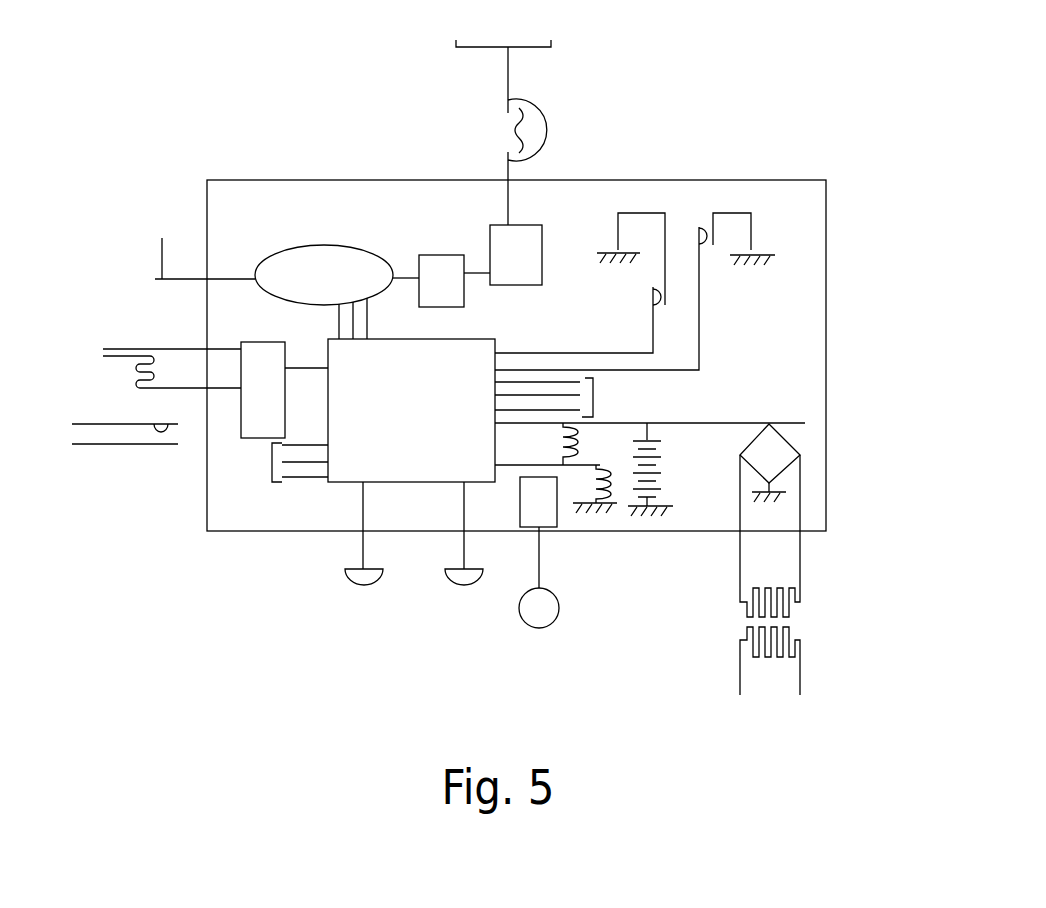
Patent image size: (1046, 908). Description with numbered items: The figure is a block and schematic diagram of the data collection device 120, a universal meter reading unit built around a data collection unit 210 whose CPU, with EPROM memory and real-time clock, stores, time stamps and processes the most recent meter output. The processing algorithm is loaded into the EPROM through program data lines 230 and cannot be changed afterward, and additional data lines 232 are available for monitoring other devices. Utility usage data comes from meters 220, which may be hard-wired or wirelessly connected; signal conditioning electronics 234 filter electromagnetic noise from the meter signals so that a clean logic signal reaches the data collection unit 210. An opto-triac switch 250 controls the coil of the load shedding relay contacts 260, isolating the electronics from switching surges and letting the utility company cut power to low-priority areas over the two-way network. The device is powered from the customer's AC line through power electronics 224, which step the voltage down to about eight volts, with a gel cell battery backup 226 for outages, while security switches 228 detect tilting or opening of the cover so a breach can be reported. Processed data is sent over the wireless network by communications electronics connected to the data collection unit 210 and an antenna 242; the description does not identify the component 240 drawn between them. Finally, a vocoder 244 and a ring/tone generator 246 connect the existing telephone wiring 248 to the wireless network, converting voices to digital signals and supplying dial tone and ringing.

The data collection device 120 is at (861, 371).
The data collection unit 210 is at (497, 340).
The meters 220 is at (519, 607).
The power electronics 224 is at (800, 663).
The battery backup 226 is at (660, 483).
The security switches 228 is at (642, 213).
The program data lines 230 is at (598, 388).
The additional data lines 232 is at (268, 452).
The signal conditioning electronics 234 is at (556, 522).
The radio receiver 240 is at (332, 247).
The antenna 242 is at (161, 253).
The vocoder 244 is at (443, 255).
The ring/tone generator 246 is at (540, 225).
The existing telephone wiring 248 is at (508, 88).
The opto-triac switch 250 is at (258, 342).
The load shedding relay contacts 260 is at (118, 447).